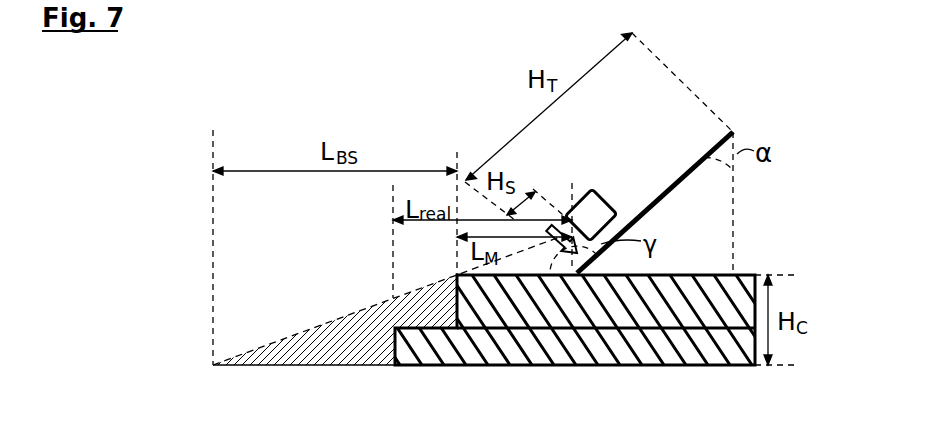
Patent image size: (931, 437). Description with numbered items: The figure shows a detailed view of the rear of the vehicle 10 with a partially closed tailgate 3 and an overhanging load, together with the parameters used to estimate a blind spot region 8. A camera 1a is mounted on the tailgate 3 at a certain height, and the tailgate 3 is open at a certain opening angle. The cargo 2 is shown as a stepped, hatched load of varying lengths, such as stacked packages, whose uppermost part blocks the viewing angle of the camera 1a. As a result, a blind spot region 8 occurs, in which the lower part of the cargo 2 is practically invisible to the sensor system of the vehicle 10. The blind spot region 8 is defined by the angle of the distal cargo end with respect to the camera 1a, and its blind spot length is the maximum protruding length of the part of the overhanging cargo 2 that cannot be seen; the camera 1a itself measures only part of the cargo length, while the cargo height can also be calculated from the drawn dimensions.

The vehicle 10 is at (152, 130).
The blind spot region 8 is at (325, 325).
The camera 1a is at (606, 199).
The tailgate 3 is at (690, 172).
The cargo 2 is at (685, 274).